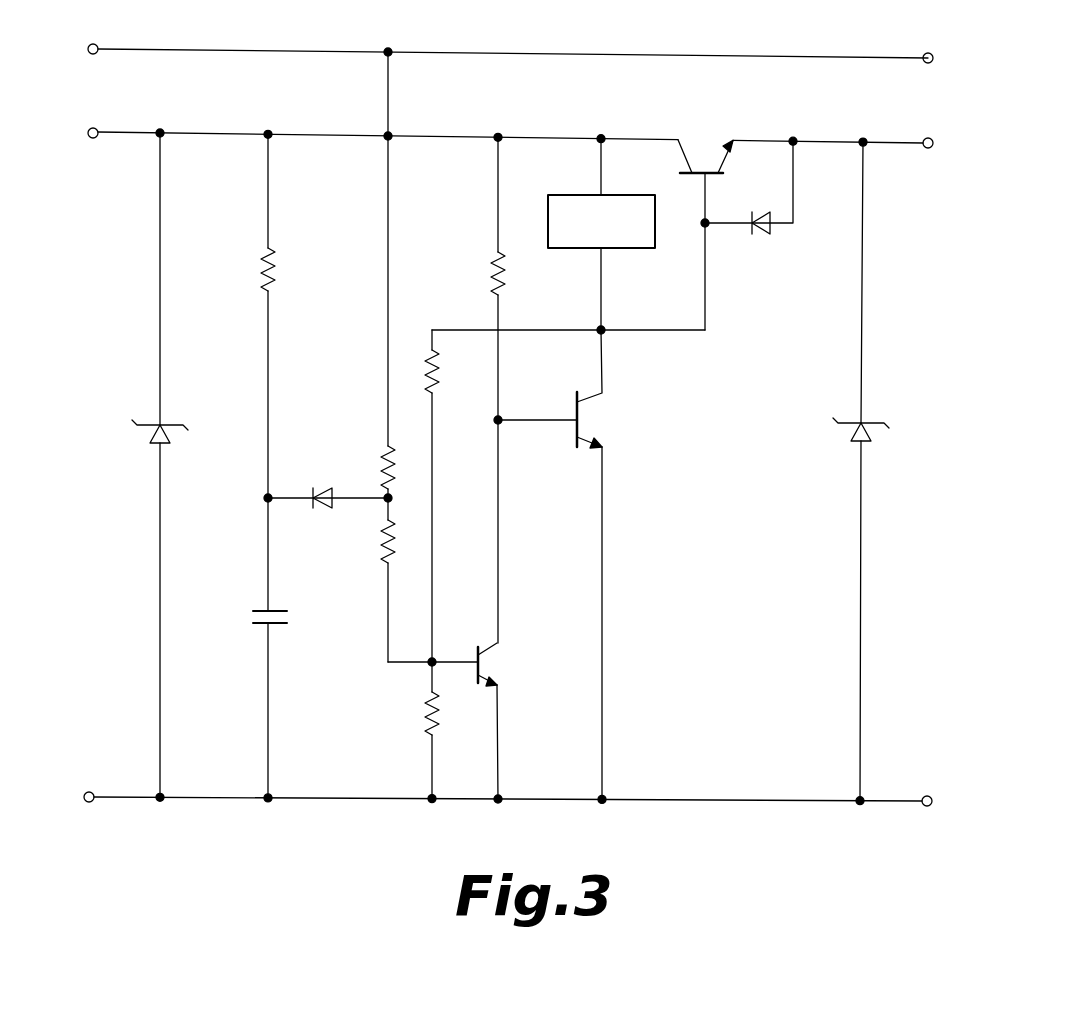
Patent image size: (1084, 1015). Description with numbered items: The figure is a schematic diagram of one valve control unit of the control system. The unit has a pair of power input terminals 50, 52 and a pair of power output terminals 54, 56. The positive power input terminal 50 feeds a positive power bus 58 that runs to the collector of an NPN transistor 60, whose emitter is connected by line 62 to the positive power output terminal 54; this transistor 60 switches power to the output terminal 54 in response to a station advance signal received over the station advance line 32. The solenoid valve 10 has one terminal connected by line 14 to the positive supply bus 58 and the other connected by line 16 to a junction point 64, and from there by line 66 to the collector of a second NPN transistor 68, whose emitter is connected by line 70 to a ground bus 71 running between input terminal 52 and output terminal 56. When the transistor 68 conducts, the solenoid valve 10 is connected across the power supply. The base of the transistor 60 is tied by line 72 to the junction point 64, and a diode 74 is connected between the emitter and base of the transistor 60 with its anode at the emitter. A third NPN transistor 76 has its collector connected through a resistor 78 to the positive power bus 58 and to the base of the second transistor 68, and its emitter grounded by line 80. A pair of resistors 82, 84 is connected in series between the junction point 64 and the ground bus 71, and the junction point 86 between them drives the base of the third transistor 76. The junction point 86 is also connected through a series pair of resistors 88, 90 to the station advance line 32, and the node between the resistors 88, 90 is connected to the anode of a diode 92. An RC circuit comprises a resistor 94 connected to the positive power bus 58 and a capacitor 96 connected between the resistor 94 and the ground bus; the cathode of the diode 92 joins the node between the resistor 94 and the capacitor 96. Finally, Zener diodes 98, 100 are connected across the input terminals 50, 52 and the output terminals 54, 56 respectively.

The solenoid valve 10 is at (646, 249).
The line 14 is at (603, 179).
The line 16 is at (596, 292).
The station advance line 32 is at (151, 51).
The positive power input terminal 50 is at (93, 140).
The power input terminal 52 is at (89, 790).
The positive power output terminal 54 is at (921, 149).
The power output terminal 56 is at (925, 808).
The positive power bus 58 is at (187, 134).
The NPN transistor 60 is at (698, 140).
The line 62 is at (823, 142).
The junction point 64 is at (605, 330).
The line 66 is at (603, 364).
The NPN transistor 68 is at (613, 439).
The line 70 is at (605, 583).
The ground bus 71 is at (309, 803).
The line 72 is at (708, 294).
The diode 74 is at (762, 250).
The NPN transistor 76 is at (508, 684).
The resistor 78 is at (505, 290).
The line 80 is at (500, 771).
The resistor 82 is at (437, 393).
The resistor 84 is at (437, 712).
The junction point 86 is at (434, 661).
The resistor 88 is at (393, 446).
The resistor 90 is at (396, 526).
The diode 92 is at (300, 520).
The resistor 94 is at (270, 250).
The capacitor 96 is at (282, 628).
The Zener diode 98 is at (168, 438).
The Zener diode 100 is at (869, 438).